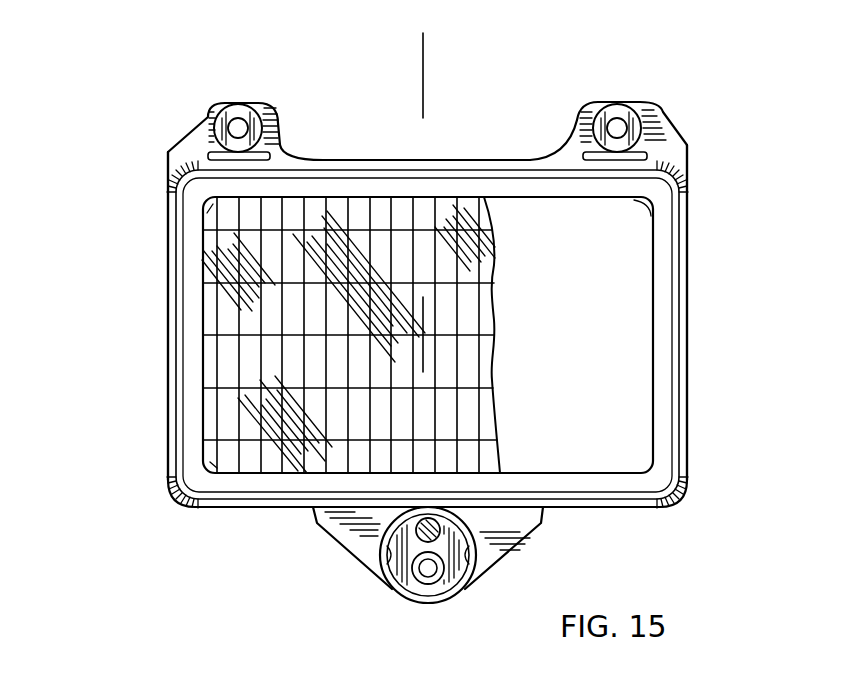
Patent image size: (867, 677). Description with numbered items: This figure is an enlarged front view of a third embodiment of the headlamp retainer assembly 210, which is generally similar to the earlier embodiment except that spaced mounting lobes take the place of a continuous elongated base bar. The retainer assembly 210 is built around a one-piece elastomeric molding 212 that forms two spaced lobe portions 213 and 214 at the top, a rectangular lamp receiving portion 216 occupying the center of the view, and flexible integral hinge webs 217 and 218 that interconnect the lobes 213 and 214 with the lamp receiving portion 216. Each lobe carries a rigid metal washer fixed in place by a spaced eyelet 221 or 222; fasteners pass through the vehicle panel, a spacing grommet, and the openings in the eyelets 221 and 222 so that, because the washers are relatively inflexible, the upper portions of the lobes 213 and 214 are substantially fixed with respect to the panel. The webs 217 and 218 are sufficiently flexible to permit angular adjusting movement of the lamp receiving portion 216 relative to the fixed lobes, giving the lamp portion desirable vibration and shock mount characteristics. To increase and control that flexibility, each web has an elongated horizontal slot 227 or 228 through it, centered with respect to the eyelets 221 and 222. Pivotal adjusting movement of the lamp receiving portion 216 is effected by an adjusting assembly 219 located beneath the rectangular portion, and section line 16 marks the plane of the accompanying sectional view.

The section line 16- 16 is at (423, 45).
The headlamp retainer assembly 210 is at (140, 412).
The one-piece elastomeric molding 212 is at (160, 152).
The lobe portion 213 is at (205, 122).
The lobe portion 214 is at (662, 118).
The rectangular lamp receiving portion 216 is at (170, 274).
The hinge web 217 is at (290, 147).
The hinge web 218 is at (676, 157).
The adjusting assembly 219 is at (365, 602).
The eyelet 221 is at (238, 113).
The eyelet 222 is at (625, 112).
The elongated horizontal slot 227 is at (288, 146).
The elongated horizontal slot 228 is at (572, 140).